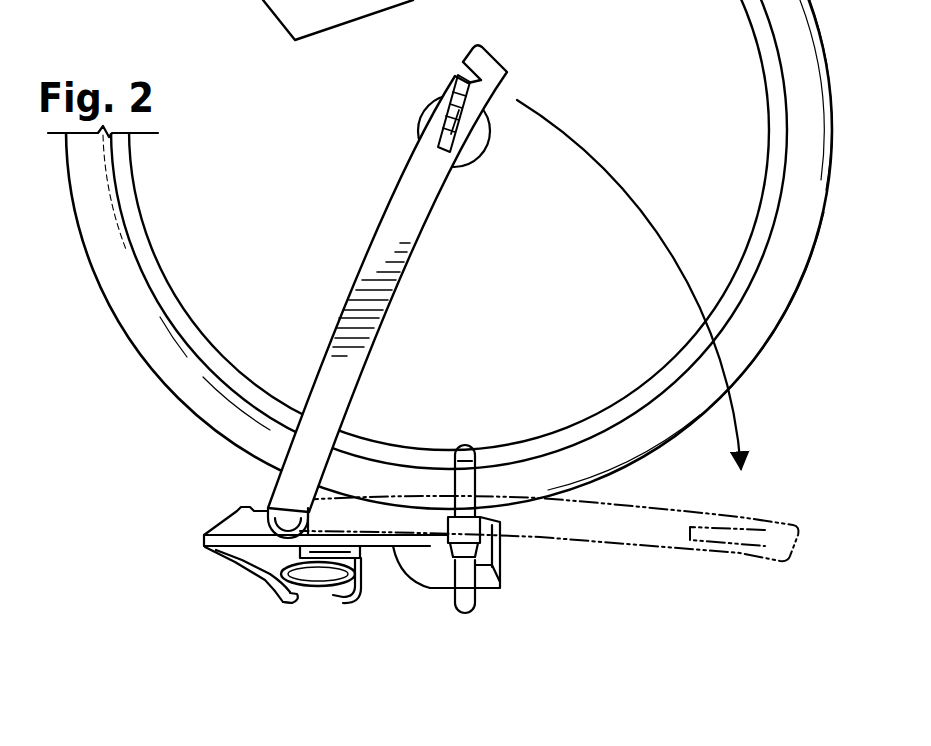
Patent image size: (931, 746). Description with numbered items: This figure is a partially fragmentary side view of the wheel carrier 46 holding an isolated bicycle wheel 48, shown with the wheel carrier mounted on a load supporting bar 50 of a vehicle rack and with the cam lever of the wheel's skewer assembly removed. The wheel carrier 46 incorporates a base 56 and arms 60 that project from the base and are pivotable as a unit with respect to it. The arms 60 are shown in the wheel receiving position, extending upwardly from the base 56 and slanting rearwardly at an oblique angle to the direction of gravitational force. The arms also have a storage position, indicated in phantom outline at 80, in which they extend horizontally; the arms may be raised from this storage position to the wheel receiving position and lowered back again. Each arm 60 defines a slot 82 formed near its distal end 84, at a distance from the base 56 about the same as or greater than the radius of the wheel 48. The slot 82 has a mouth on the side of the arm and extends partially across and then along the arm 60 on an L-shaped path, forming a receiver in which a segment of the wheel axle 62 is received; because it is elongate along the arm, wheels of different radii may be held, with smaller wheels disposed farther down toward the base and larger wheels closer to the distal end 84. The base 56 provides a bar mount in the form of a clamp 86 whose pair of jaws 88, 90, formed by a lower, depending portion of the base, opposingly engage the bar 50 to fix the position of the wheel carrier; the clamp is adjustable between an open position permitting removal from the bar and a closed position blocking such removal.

The wheel carrier 46 is at (326, 537).
The bicycle wheel 48 is at (98, 291).
The load supporting bar 50 is at (315, 588).
The base 56 is at (206, 525).
The arms 60 is at (528, 276).
The axle 62 is at (440, 134).
The storage position 80 is at (669, 495).
The slot 82 is at (423, 95).
The distal end 84 is at (496, 54).
The clamp 86 is at (256, 586).
The jaw 88 is at (286, 608).
The jaw 90 is at (354, 597).